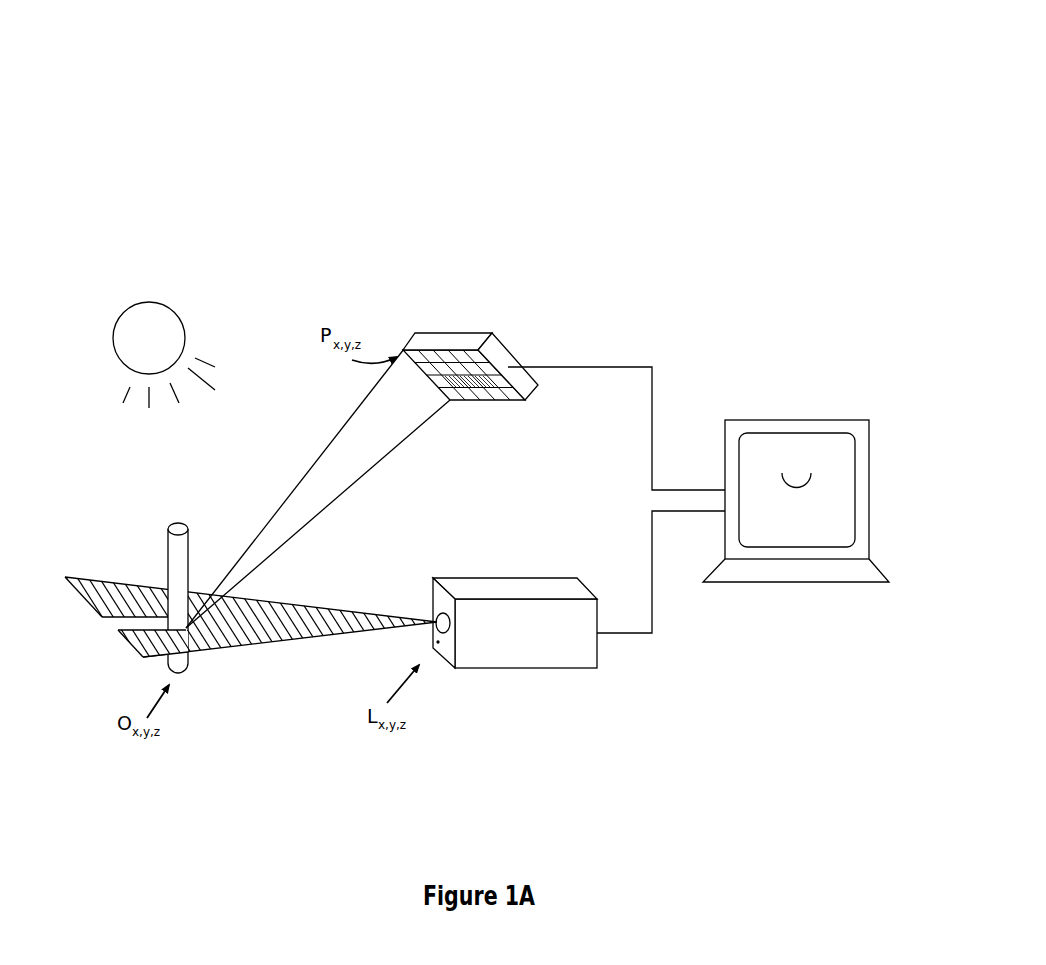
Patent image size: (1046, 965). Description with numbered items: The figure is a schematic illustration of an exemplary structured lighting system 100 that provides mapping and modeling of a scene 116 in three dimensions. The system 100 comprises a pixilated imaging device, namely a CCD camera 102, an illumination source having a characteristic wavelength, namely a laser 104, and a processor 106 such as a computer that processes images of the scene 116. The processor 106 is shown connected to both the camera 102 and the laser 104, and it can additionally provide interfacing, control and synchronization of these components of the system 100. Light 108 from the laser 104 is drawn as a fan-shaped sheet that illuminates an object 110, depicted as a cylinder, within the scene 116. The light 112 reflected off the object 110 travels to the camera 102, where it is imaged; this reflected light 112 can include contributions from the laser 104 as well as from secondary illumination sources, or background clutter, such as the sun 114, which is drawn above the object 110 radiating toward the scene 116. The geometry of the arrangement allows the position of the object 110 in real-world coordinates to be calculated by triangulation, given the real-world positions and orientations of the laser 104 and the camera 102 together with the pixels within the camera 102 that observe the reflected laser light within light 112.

The structured lighting system 100 is at (601, 58).
The CCD camera 102 is at (497, 352).
The laser 104 is at (536, 646).
The processor 106 is at (766, 531).
The light 108 is at (306, 628).
The object 110 is at (177, 558).
The reflected light 112 is at (357, 471).
The sun 114 is at (133, 349).
The scene 116 is at (229, 441).